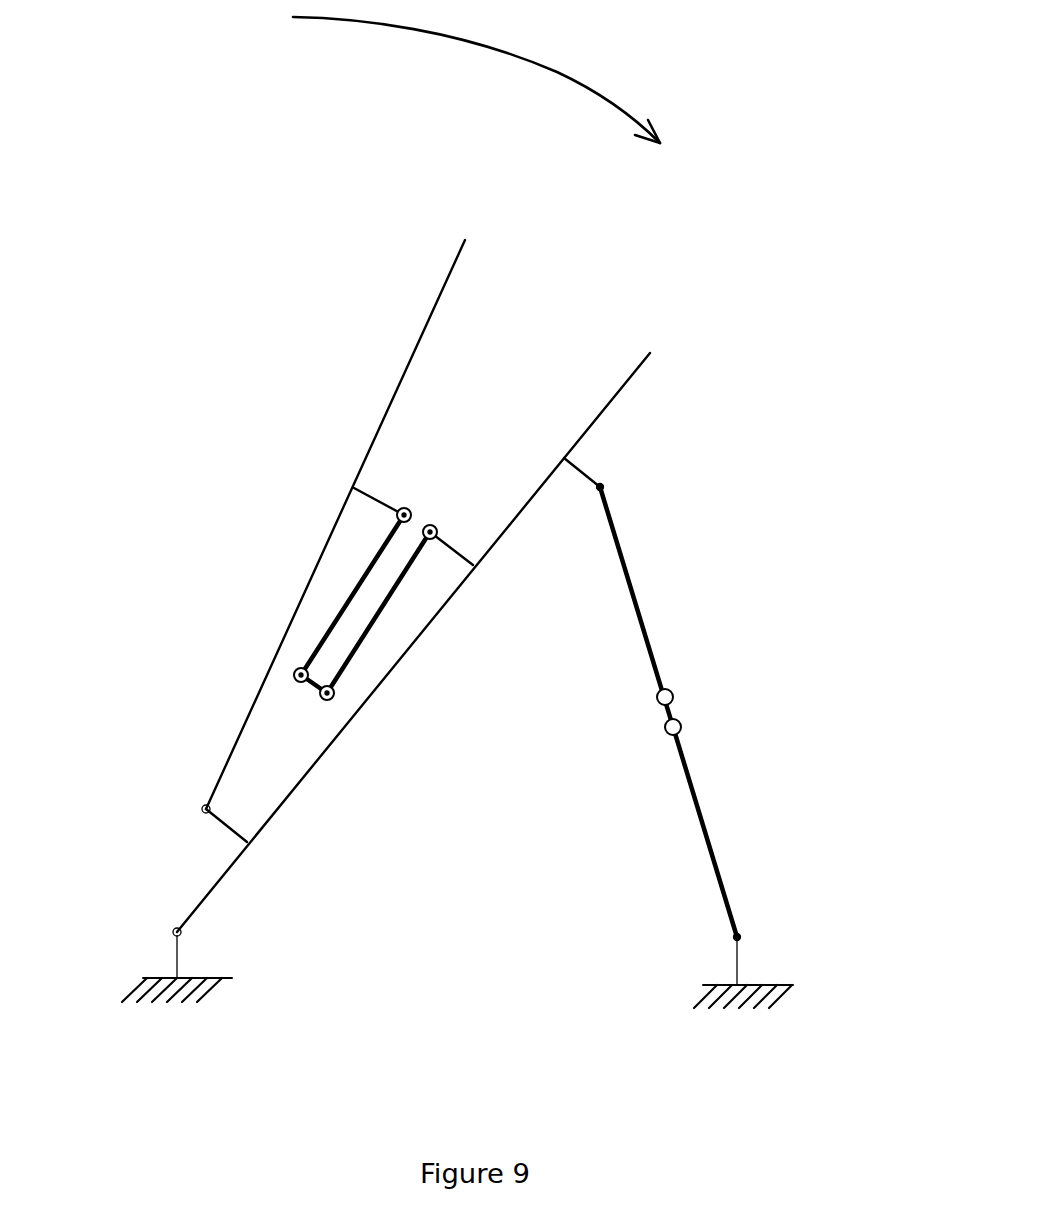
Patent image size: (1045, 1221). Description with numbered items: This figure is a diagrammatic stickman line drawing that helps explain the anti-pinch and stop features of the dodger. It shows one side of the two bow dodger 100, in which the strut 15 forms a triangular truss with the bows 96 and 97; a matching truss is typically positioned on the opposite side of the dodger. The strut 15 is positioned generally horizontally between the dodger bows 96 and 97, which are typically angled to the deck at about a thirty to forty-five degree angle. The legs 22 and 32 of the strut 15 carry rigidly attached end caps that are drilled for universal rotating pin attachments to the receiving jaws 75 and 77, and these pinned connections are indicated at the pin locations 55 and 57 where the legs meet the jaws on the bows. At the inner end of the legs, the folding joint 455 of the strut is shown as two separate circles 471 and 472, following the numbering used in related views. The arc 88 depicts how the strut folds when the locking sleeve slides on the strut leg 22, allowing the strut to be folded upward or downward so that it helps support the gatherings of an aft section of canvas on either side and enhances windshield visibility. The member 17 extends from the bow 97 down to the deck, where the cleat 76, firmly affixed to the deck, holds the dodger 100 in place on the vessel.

The arc 88 is at (560, 73).
The two bow dodger 100 is at (210, 403).
The bow 96 is at (407, 363).
The folding joint 455 is at (285, 710).
The strut 15 is at (480, 540).
The bow 97 is at (610, 408).
The receiving jaw 75 is at (373, 497).
The receiving jaw 77 is at (453, 547).
The leg 22 is at (365, 567).
The leg 32 is at (368, 635).
The first pivot pin 55 is at (405, 508).
The second pivot pin 57 is at (432, 525).
The circle 471 is at (294, 675).
The circle 472 is at (327, 700).
The strut 17 is at (700, 628).
The cleat 76 is at (738, 958).